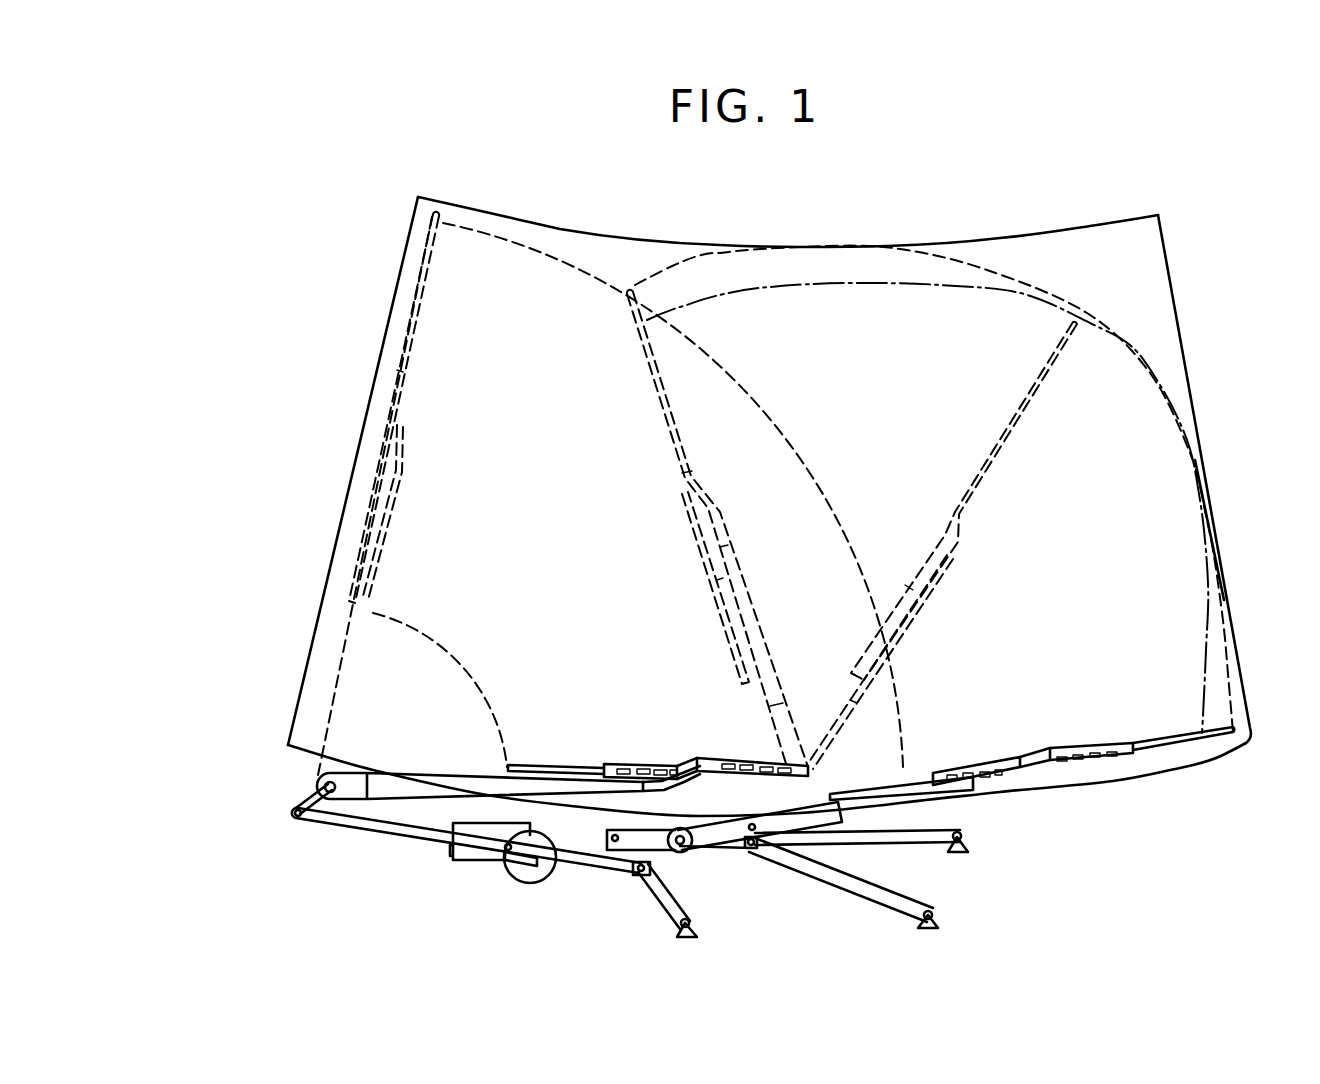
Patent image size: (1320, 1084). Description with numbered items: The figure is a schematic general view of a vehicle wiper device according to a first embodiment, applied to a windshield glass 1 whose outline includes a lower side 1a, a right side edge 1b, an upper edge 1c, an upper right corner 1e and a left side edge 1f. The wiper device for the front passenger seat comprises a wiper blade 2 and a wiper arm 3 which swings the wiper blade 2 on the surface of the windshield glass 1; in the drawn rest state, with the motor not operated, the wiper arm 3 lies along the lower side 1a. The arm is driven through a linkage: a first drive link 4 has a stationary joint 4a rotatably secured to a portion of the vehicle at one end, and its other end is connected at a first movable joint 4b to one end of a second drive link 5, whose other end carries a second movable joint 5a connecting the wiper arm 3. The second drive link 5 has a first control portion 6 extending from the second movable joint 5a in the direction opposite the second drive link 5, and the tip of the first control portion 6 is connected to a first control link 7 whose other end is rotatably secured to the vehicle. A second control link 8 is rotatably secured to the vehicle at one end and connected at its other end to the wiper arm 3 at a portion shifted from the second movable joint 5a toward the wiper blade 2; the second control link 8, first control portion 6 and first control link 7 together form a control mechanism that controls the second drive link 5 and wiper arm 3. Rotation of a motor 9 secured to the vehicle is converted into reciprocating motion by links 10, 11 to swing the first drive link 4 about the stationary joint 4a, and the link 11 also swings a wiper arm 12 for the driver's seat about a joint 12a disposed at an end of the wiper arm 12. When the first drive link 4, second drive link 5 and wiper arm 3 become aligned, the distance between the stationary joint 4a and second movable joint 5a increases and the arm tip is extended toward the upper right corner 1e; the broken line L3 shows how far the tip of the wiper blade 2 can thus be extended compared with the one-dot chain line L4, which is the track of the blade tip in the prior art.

The windshield glass 1 is at (1147, 288).
The lower side of windshield glass 1a is at (1117, 786).
The right side edge of windshield 1b is at (1203, 455).
The upper edge of windshield 1c is at (1062, 237).
The upper right corner of windshield glass 1e is at (1088, 305).
The left side edge of windshield 1f is at (371, 407).
The wiper blade 2 is at (1167, 745).
The wiper arm 3 is at (718, 838).
The first drive link 4 is at (655, 890).
The stationary joint 4a is at (681, 926).
The first movable joint 4b is at (607, 848).
The second drive link 5 is at (650, 840).
The second movable joint 5a is at (689, 850).
The first control portion 6 is at (740, 845).
The first control link 7 is at (787, 857).
The second control link 8 is at (905, 836).
The motor 9 is at (455, 850).
The link 10 is at (520, 857).
The link 11 is at (575, 856).
The wiper arm for the driver's seat 12 is at (413, 783).
The joint 12a is at (318, 789).
The broken line L3 is at (1150, 372).
The one-dot chain line L4 is at (1157, 405).